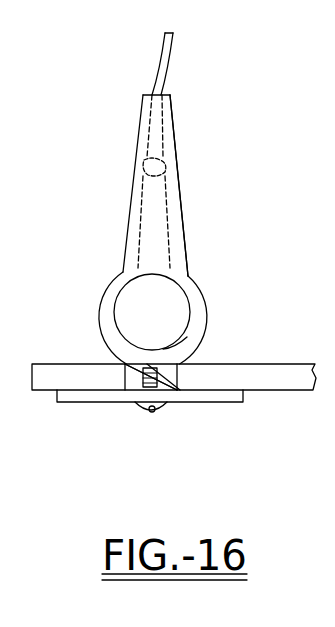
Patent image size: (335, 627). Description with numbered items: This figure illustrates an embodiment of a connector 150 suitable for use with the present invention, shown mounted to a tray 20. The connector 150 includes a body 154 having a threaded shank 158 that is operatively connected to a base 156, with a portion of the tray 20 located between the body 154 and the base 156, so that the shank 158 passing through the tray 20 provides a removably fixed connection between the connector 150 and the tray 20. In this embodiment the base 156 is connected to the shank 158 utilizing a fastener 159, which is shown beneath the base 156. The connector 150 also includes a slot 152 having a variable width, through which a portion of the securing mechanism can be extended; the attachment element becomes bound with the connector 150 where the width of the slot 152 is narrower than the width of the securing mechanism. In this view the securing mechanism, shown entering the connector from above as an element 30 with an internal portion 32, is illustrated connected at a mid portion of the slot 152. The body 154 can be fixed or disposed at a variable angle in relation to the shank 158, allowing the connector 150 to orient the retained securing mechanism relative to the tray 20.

The tray 20 is at (285, 364).
The cable 30 is at (162, 53).
The cable termination cavity 32 is at (142, 164).
The connector 150 is at (128, 212).
The slot 152 is at (177, 164).
The body 154 is at (190, 341).
The base 156 is at (105, 402).
The shank 158 is at (177, 364).
The fastener 159 is at (158, 411).